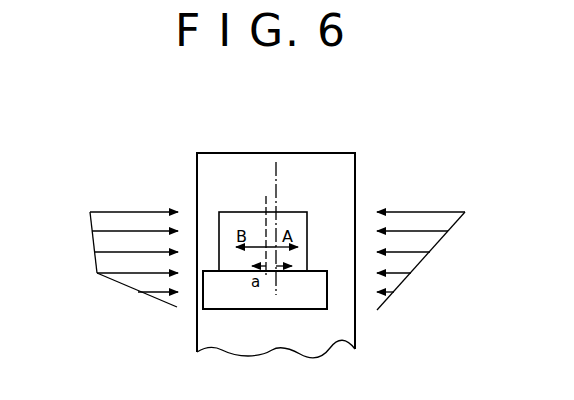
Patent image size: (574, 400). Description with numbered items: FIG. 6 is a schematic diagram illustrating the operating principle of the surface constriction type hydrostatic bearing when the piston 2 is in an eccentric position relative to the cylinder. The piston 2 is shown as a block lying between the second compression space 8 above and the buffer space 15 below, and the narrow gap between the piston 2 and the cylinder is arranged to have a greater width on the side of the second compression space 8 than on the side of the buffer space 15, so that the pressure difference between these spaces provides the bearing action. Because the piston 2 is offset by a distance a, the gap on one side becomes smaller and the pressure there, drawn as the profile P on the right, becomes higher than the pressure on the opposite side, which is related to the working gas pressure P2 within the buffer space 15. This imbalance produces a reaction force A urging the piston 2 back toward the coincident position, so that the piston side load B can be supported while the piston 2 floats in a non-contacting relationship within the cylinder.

The second compression space 8 is at (248, 152).
The buffer space 15 is at (230, 356).
The piston 2 is at (293, 302).
The working gas pressure P2 is at (177, 308).
The pressure P is at (377, 310).